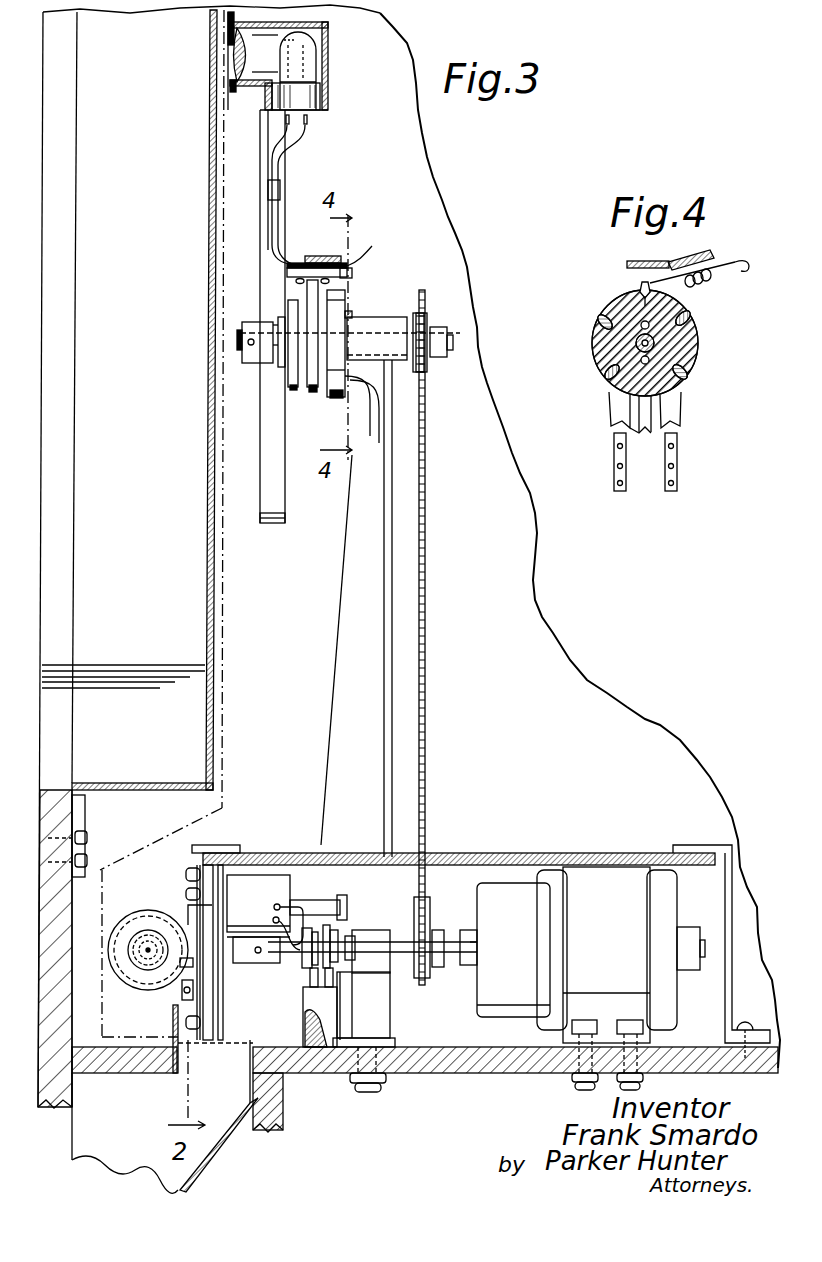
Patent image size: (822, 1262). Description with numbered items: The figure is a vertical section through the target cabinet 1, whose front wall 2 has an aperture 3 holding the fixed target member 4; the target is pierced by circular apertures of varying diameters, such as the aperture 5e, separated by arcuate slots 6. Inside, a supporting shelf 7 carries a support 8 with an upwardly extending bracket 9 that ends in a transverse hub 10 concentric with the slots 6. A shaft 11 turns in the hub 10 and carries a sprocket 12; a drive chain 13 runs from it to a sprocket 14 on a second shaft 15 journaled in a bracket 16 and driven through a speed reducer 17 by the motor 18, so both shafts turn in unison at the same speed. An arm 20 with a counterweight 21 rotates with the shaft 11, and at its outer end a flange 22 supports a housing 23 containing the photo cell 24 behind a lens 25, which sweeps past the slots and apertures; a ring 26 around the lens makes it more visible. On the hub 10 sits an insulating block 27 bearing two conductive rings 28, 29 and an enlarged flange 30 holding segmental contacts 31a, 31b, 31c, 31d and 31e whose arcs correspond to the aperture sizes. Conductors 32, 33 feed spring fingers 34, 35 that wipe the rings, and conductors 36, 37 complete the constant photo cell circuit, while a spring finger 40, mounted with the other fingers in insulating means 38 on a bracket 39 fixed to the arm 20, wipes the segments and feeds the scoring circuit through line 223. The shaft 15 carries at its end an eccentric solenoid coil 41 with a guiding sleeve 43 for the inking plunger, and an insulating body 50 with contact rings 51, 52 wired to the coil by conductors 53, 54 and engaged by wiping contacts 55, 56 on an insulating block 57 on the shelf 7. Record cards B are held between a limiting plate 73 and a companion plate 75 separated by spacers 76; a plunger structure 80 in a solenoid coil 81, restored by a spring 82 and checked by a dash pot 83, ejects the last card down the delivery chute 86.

In FIG. 3, the cabinet 1 is at (573, 663).
In FIG. 3, the front wall 2 is at (228, 25).
In FIG. 3, the aperture 3 is at (57, 782).
In FIG. 3, the target member 4 is at (207, 541).
In FIG. 3, the circular aperture 5e is at (228, 55).
In FIG. 3, the arcuate slots 6 is at (207, 628).
In FIG. 3, the supporting shelf 7 is at (466, 1062).
In FIG. 3, the support 8 is at (478, 855).
In FIG. 3, the bracket 9 is at (384, 618).
In FIG. 4, the bracket 9 is at (655, 418).
In FIG. 3, the hub 10 is at (392, 318).
In FIG. 3, the shaft 11 is at (450, 343).
In FIG. 4, the shaft 11 is at (640, 345).
In FIG. 3, the sprocket 12 is at (428, 318).
In FIG. 3, the drive chain 13 is at (427, 656).
In FIG. 4, the drive chain 13 is at (678, 466).
In FIG. 3, the sprocket 14 is at (433, 930).
In FIG. 3, the shaft 15 is at (252, 963).
In FIG. 3, the bracket 16 is at (393, 990).
In FIG. 3, the speed reducer 17 is at (490, 995).
In FIG. 3, the motor 18 is at (598, 887).
In FIG. 3, the arm 20 is at (262, 178).
In FIG. 3, the counterweight 21 is at (272, 525).
In FIG. 3, the flange 22 is at (322, 115).
In FIG. 3, the housing 23 is at (330, 42).
In FIG. 3, the photo cell 24 is at (316, 68).
In FIG. 3, the lens 25 is at (243, 86).
In FIG. 3, the ring 26 is at (232, 88).
In FIG. 3, the insulating block 27 is at (283, 372).
In FIG. 4, the insulating block 27 is at (688, 357).
In FIG. 3, the conductive ring 28 is at (296, 393).
In FIG. 3, the conductive ring 29 is at (313, 398).
In FIG. 3, the flange 30 is at (350, 305).
In FIG. 4, the flange 30 is at (698, 345).
In FIG. 3, the segmental contact 31a is at (352, 318).
In FIG. 4, the segmental contact 31a is at (690, 320).
In FIG. 4, the segmental contact 31b is at (686, 376).
In FIG. 4, the segmental contact 31c is at (608, 380).
In FIG. 4, the segmental contact 31d is at (598, 326).
In FIG. 4, the segmental contact 31e is at (640, 288).
In FIG. 3, the conductor 32 is at (284, 160).
In FIG. 3, the conductor 33 is at (296, 140).
In FIG. 3, the spring finger 34 is at (307, 282).
In FIG. 3, the spring finger 35 is at (288, 302).
In FIG. 3, the conductor 36 is at (358, 400).
In FIG. 3, the conductor 37 is at (375, 432).
In FIG. 3, the insulating means 38 is at (324, 262).
In FIG. 4, the insulating means 38 is at (712, 256).
In FIG. 3, the bracket 39 is at (287, 265).
In FIG. 4, the bracket 39 is at (660, 256).
In FIG. 3, the spring finger 40 is at (352, 276).
In FIG. 4, the spring finger 40 is at (712, 284).
In FIG. 3, the solenoid coil 41 is at (252, 882).
In FIG. 3, the guiding sleeve 43 is at (325, 902).
In FIG. 3, the insulating body 50 is at (310, 962).
In FIG. 3, the contact ring 51 is at (318, 968).
In FIG. 3, the contact ring 52 is at (338, 935).
In FIG. 3, the conductor 53 is at (303, 950).
In FIG. 3, the conductor 54 is at (300, 905).
In FIG. 3, the wiping contact 55 is at (312, 992).
In FIG. 3, the wiping contact 56 is at (336, 1005).
In FIG. 3, the insulating block 57 is at (306, 1032).
In FIG. 3, the limiting plate 73 is at (197, 896).
In FIG. 3, the companion plate 75 is at (219, 1012).
In FIG. 3, the spacers 76 is at (207, 868).
In FIG. 3, the solenoid plunger structure 80 is at (130, 950).
In FIG. 3, the solenoid coil 81 is at (142, 911).
In FIG. 3, the spring 82 is at (183, 995).
In FIG. 3, the dash pot 83 is at (142, 972).
In FIG. 3, the delivery chute 86 is at (210, 1163).
In FIG. 3, the line 223 is at (375, 240).
In FIG. 4, the line 223 is at (744, 272).
In FIG. 3, the cards B is at (188, 905).